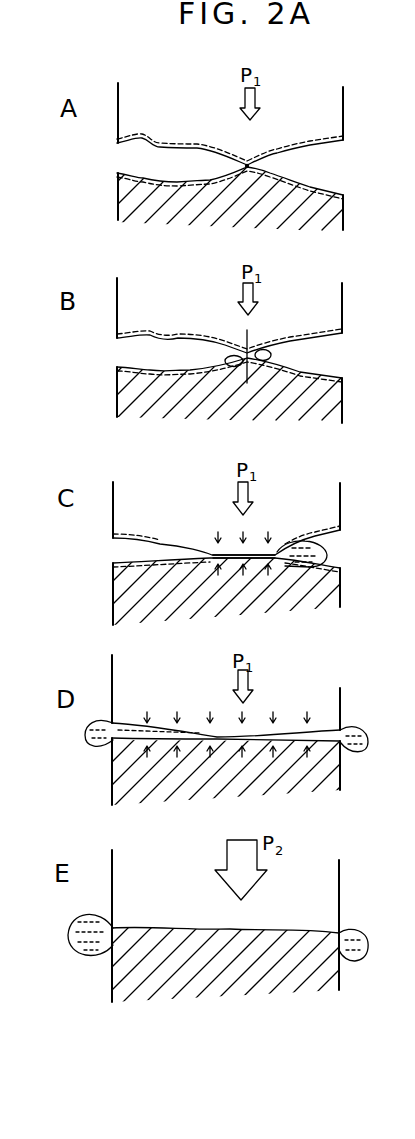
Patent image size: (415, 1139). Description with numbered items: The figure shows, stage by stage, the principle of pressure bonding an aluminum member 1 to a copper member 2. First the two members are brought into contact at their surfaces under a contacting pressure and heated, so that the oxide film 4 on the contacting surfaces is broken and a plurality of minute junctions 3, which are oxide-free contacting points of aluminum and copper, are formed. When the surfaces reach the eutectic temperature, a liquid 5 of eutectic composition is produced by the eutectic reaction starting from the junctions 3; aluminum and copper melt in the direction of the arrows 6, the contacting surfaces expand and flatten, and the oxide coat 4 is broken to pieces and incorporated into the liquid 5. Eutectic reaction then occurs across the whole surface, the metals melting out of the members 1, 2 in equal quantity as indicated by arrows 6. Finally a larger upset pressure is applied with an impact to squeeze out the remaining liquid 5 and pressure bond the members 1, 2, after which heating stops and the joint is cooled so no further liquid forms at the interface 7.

The member of aluminum 1 is at (115, 883).
The member of copper 2 is at (117, 968).
The minute junctions 3 is at (247, 167).
The oxide film 4 is at (335, 550).
The liquid of eutectic composition 5 is at (97, 747).
The arrow 6 is at (280, 550).
The interface 7 is at (288, 928).